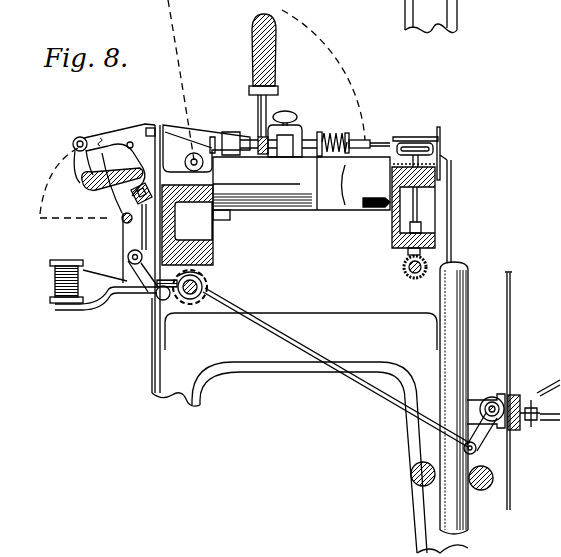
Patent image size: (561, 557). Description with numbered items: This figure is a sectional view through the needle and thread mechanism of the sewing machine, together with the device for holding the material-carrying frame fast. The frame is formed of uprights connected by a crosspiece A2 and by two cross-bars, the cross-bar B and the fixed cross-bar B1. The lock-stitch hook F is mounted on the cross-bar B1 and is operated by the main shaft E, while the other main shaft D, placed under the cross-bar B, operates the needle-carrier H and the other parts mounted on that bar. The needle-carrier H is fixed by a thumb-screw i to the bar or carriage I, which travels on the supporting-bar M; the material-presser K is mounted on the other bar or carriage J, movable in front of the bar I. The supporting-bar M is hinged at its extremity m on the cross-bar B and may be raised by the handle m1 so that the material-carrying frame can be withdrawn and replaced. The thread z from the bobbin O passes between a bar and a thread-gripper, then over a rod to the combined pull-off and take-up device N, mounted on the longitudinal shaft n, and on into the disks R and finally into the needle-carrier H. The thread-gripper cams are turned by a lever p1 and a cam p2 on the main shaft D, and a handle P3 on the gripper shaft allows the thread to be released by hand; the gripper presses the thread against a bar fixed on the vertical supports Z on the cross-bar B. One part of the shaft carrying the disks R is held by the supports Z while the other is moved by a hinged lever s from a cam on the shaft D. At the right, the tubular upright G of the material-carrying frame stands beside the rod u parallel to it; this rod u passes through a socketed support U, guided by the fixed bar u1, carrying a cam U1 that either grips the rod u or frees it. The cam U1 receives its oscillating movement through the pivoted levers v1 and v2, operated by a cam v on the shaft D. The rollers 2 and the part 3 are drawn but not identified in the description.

The hand lever m1 is at (256, 72).
The thumb screw i is at (284, 111).
The slide block I is at (292, 131).
The collar H is at (320, 138).
The spring rod K is at (362, 140).
The collar J is at (320, 154).
The shaft casing M is at (259, 198).
The bracket plate F is at (440, 138).
The bracket B1 is at (392, 222).
The knurled nut E is at (403, 268).
The bearing block B is at (187, 225).
The catch R is at (150, 119).
The lever arm m is at (206, 148).
The stud s is at (187, 170).
The pin N is at (75, 134).
The spring z is at (200, 131).
The lever Z is at (114, 196).
The pawl arm P3 is at (112, 169).
The pivot pin n is at (120, 220).
The pivot p1 is at (140, 238).
The spool O is at (83, 271).
The frame arm A2 is at (246, 420).
The ratchet wheel D is at (207, 286).
The pawl p2 is at (212, 272).
The connecting rod v2 is at (336, 367).
The post G is at (453, 347).
The rod u is at (515, 391).
The bearing U1 is at (486, 399).
The screw U is at (516, 399).
The nut u1 is at (517, 428).
The part 3 is at (548, 405).
The lever v is at (524, 452).
The pivot pin v1 is at (484, 447).
The rollers 2 is at (412, 481).